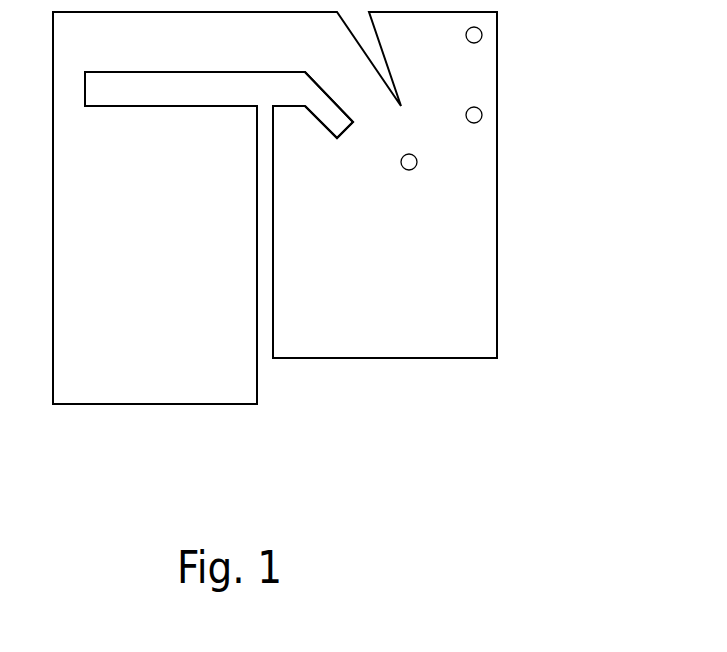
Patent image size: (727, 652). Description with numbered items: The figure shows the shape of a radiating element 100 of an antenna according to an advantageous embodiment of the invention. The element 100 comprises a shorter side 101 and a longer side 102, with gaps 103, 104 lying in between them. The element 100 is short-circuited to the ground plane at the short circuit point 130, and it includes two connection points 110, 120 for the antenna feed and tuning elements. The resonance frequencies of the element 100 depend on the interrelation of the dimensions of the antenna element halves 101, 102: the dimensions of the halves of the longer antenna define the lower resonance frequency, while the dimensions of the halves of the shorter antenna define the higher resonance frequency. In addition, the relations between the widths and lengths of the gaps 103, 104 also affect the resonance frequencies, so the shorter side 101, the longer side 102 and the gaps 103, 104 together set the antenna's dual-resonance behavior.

The radiating element 100 is at (317, 208).
The shorter side 101 is at (385, 377).
The longer side 102 is at (155, 425).
The gap 103 is at (219, 119).
The gap 104 is at (225, 255).
The connection point 110 is at (447, 188).
The connection point 120 is at (521, 134).
The short circuit point 130 is at (526, 57).